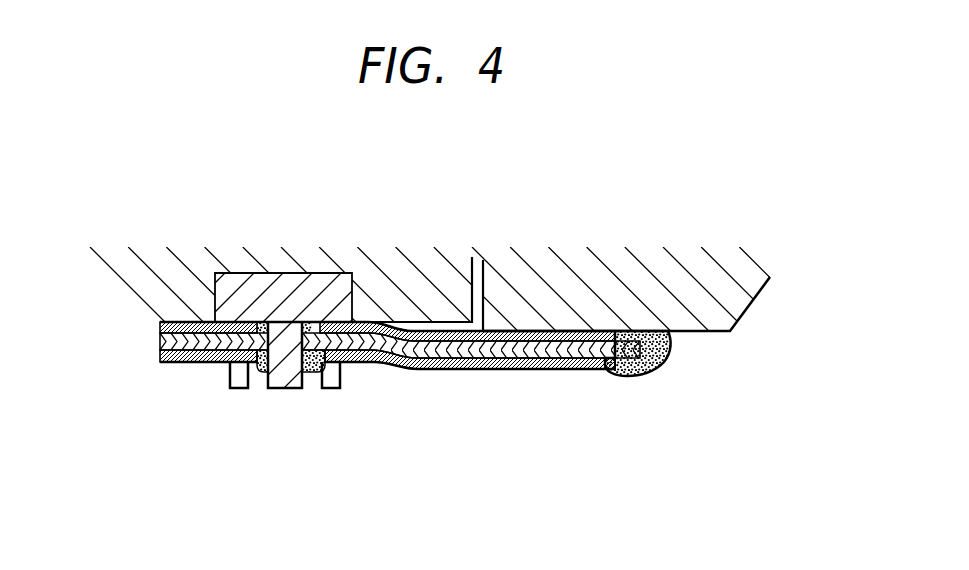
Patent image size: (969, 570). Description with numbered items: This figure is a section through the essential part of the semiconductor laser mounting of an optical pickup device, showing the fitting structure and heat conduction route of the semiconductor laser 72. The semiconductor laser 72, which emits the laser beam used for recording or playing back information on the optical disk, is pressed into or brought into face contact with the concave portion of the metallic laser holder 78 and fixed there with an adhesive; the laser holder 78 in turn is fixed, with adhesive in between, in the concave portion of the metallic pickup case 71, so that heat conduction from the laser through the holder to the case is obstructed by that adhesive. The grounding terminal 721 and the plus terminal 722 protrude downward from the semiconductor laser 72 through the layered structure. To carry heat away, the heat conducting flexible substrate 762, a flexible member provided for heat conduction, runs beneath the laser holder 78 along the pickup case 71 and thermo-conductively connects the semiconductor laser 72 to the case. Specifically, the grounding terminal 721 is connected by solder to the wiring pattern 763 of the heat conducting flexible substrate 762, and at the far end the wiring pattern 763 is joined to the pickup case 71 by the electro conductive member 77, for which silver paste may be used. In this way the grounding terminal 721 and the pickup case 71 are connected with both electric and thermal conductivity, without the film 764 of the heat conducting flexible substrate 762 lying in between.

The pickup case 71 is at (712, 313).
The semiconductor laser 72 is at (247, 288).
The grounding terminal 721 is at (292, 372).
The plus terminal 722 is at (228, 377).
The heat conducting flexible substrate 762 is at (400, 320).
The wiring pattern 763 is at (583, 347).
The film 764 is at (548, 372).
The electro conductive member 77 is at (648, 379).
The laser holder 78 is at (352, 258).